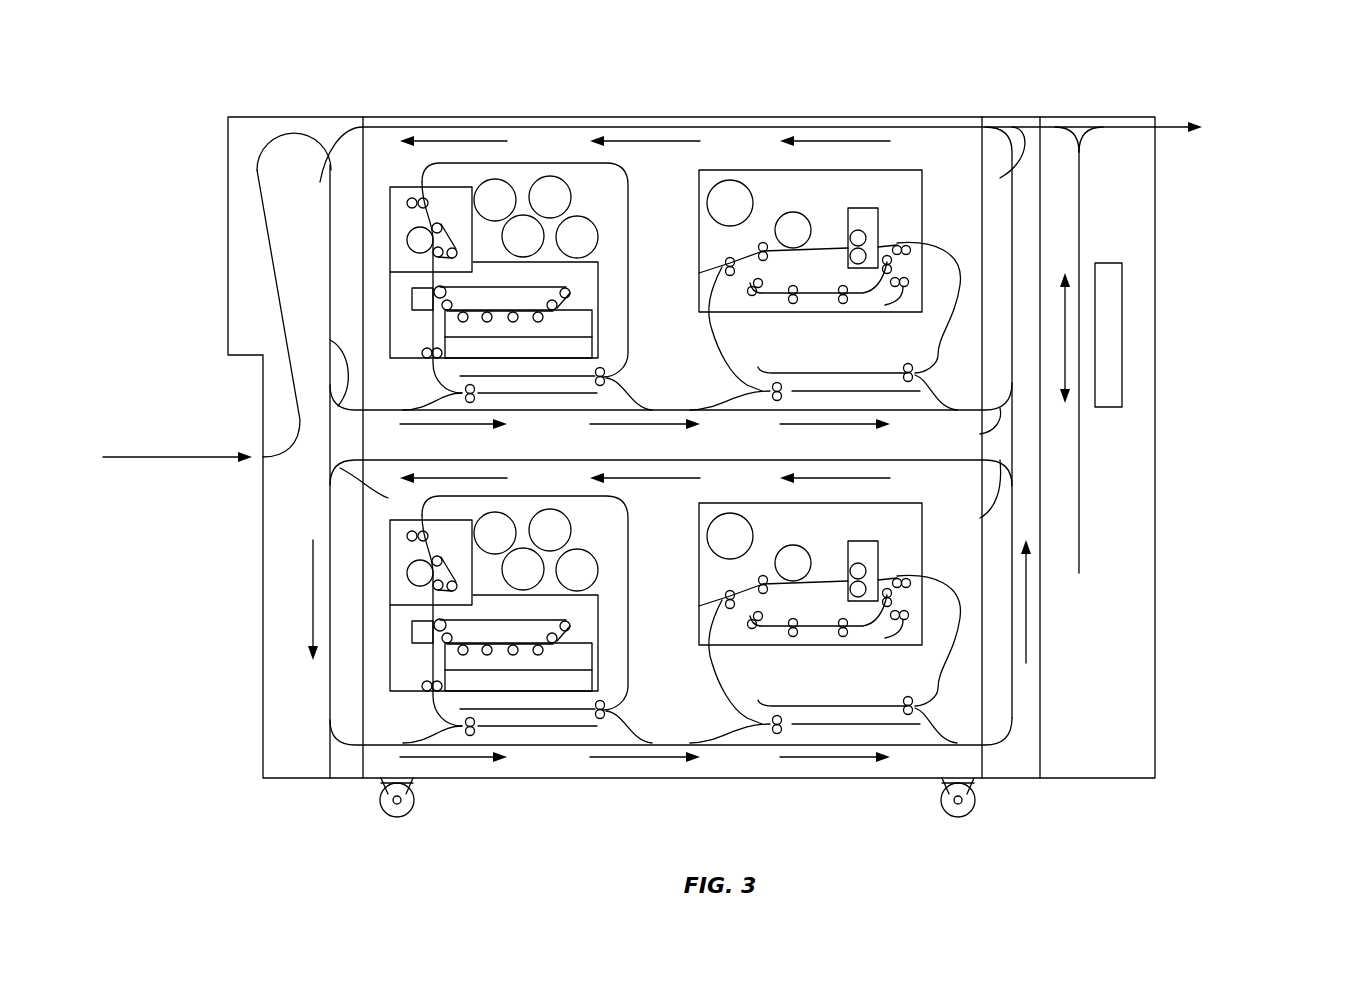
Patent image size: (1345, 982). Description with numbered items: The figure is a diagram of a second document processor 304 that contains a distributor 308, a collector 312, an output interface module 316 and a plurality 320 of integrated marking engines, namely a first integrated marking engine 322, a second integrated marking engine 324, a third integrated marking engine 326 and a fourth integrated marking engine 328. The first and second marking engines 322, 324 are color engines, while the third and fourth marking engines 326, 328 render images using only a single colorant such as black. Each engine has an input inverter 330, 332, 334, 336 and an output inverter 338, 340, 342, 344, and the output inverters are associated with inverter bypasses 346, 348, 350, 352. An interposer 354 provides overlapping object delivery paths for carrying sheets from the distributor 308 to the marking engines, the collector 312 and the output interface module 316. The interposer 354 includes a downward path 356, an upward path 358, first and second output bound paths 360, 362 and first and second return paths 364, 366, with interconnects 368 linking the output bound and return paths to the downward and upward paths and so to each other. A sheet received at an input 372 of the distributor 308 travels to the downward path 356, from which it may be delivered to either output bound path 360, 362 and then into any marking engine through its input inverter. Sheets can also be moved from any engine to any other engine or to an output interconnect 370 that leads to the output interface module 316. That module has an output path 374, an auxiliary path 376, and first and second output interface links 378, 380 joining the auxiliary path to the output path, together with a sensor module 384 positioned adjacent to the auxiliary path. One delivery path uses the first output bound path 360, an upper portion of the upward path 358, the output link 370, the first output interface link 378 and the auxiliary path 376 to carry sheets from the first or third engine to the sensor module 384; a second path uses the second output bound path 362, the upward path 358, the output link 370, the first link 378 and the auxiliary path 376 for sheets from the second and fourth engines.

The second document processor 304 is at (829, 72).
The distributor 308 is at (305, 117).
The collector 312 is at (1032, 126).
The output interface module 316 is at (1147, 205).
The plurality of integrated marking engines 320 is at (629, 68).
The first integrated marking engine 322 is at (390, 282).
The second integrated marking engine 324 is at (392, 665).
The third integrated marking engine 326 is at (905, 170).
The fourth integrated marking engine 328 is at (883, 503).
The input inverter 330 is at (520, 396).
The input inverter 332 is at (533, 729).
The input inverter 334 is at (888, 393).
The input inverter 336 is at (893, 725).
The output inverter 338 is at (562, 379).
The output inverter 340 is at (572, 712).
The output inverter 342 is at (813, 372).
The output inverter 344 is at (813, 705).
The inverter bypass 346 is at (630, 386).
The inverter bypass 348 is at (630, 719).
The inverter bypass 350 is at (940, 369).
The inverter bypass 352 is at (940, 705).
The interposer 354 is at (330, 690).
The downward path 356 is at (330, 487).
The upward path 358 is at (1015, 688).
The first output bound path 360 is at (388, 410).
The second output bound path 362 is at (443, 748).
The first return path 364 is at (715, 127).
The second return path 366 is at (848, 460).
The interconnects 368 is at (332, 172).
The output interconnect 370 is at (1002, 178).
The input 372 is at (262, 453).
The output path 374 is at (1085, 127).
The auxiliary path 376 is at (1081, 483).
The first output interface link 378 is at (1070, 141).
The second output interface link 380 is at (1088, 133).
The sensor module 384 is at (1122, 328).